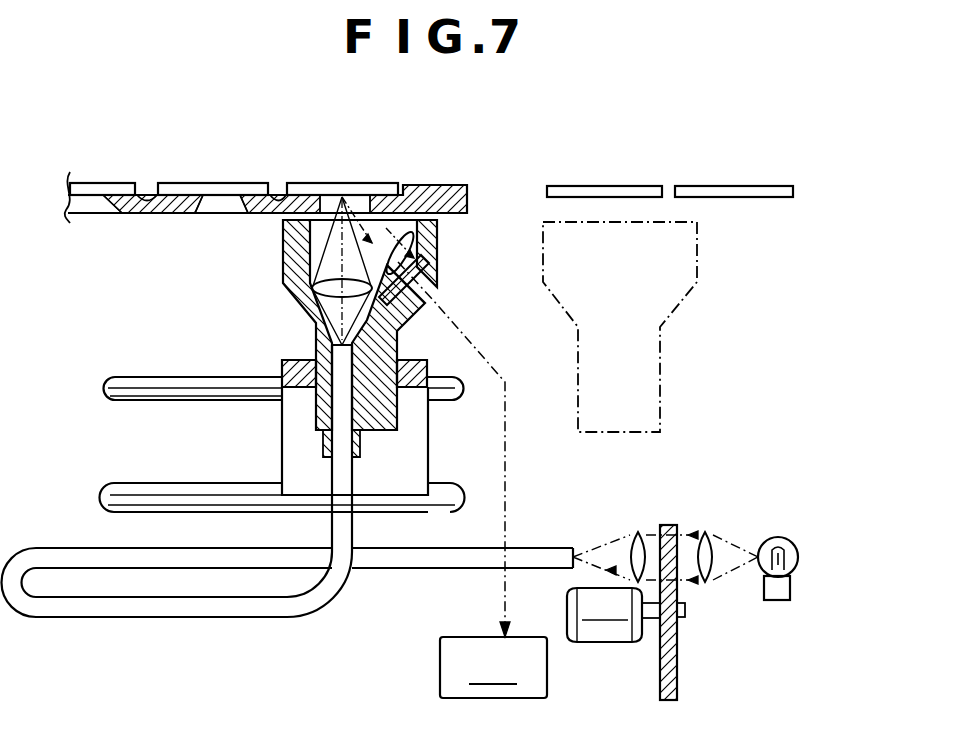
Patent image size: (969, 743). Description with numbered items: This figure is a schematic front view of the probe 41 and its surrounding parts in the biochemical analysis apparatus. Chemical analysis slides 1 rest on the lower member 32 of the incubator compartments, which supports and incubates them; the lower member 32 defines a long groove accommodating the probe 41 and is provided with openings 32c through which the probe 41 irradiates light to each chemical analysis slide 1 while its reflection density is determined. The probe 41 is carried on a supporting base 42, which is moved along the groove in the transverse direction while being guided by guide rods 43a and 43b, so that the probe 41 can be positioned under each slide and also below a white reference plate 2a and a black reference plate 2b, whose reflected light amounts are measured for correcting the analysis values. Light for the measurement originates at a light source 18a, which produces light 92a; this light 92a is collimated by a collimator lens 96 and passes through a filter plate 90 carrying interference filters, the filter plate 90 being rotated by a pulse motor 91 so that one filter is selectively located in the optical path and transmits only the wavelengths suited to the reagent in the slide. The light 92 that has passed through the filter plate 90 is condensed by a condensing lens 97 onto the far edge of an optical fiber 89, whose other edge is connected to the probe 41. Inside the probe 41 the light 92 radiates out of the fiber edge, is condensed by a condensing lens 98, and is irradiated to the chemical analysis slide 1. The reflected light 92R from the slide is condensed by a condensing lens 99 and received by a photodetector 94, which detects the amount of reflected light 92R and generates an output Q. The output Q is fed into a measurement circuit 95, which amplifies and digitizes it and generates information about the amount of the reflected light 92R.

The chemical analysis slide 1 is at (312, 183).
The white reference plate 2a is at (598, 186).
The black reference plate 2b is at (737, 186).
The lower member 32 is at (440, 184).
The opening 32c is at (197, 214).
The reflected light 92R is at (370, 183).
The probe 41 is at (283, 273).
The supporting base 42 is at (290, 432).
The guide rod 43a is at (128, 377).
The guide rod 43b is at (115, 484).
The light 92 is at (330, 240).
The photodetector 94 is at (430, 272).
The condensing lens 98 is at (312, 291).
The condensing lens 99 is at (420, 238).
The optical fiber 89 is at (208, 618).
The output Q is at (510, 418).
The measurement circuit 95 is at (493, 667).
The condensing lens 97 is at (626, 538).
The collimator lens 96 is at (718, 540).
The light 92a is at (733, 538).
The light source 18a is at (799, 563).
The filter plate 90 is at (680, 625).
The pulse motor 91 is at (608, 642).